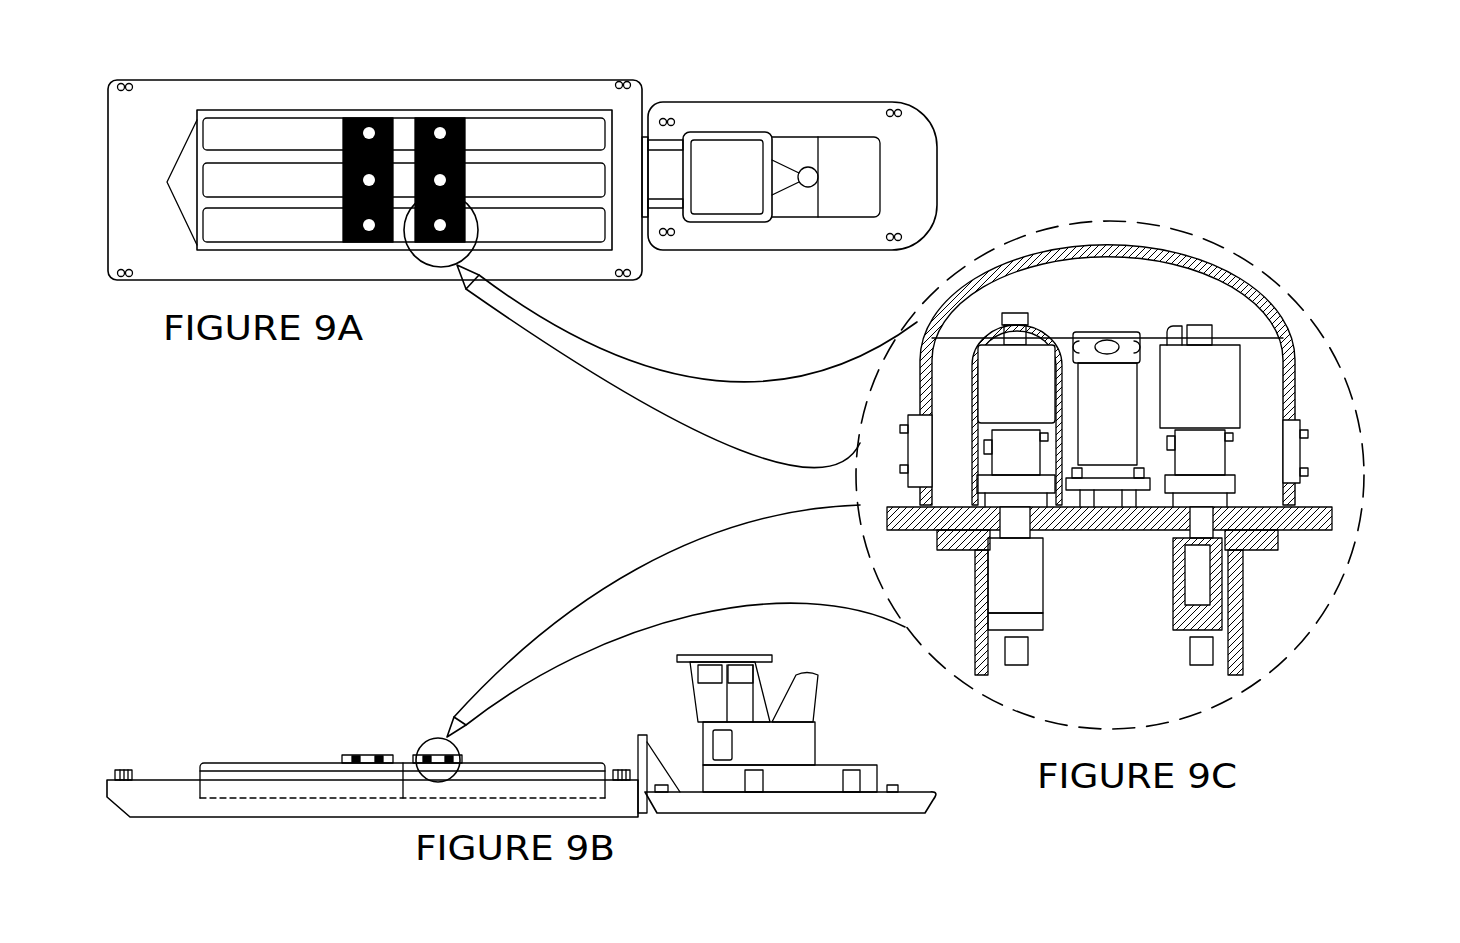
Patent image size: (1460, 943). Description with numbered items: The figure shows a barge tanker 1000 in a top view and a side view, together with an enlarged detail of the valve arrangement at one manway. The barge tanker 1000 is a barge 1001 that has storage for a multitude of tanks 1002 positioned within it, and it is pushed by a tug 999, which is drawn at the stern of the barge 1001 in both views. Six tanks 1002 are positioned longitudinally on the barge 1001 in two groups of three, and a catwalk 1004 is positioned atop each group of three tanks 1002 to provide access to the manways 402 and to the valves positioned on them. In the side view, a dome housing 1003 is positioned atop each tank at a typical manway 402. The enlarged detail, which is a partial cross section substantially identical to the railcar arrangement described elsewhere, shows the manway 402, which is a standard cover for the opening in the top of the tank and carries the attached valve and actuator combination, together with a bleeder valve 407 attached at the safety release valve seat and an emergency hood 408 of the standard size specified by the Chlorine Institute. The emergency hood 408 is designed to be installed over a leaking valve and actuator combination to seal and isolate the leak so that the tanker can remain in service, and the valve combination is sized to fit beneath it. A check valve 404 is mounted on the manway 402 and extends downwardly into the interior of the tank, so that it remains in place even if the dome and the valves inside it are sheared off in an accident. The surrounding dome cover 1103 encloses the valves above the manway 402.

In FIG. 9A, the tug 999 is at (725, 103).
In FIG. 9B, the tug 999 is at (807, 695).
In FIG. 9A, the barge tanker 1000 is at (457, 63).
In FIG. 9B, the barge tanker 1000 is at (355, 648).
In FIG. 9A, the barge 1001 is at (587, 278).
In FIG. 9B, the barge 1001 is at (152, 783).
In FIG. 9A, the tanks 1002 is at (322, 225).
In FIG. 9B, the dome housing 1003 is at (437, 758).
In FIG. 9A, the catwalk 1004 is at (423, 120).
In FIG. 9C, the protective cover 1103 is at (1178, 255).
In FIG. 9C, the emergency hood 408 is at (1037, 322).
In FIG. 9C, the bleeder valve 407 is at (1110, 332).
In FIG. 9C, the check valve 404 is at (1170, 560).
In FIG. 9C, the manway 402 is at (1332, 520).